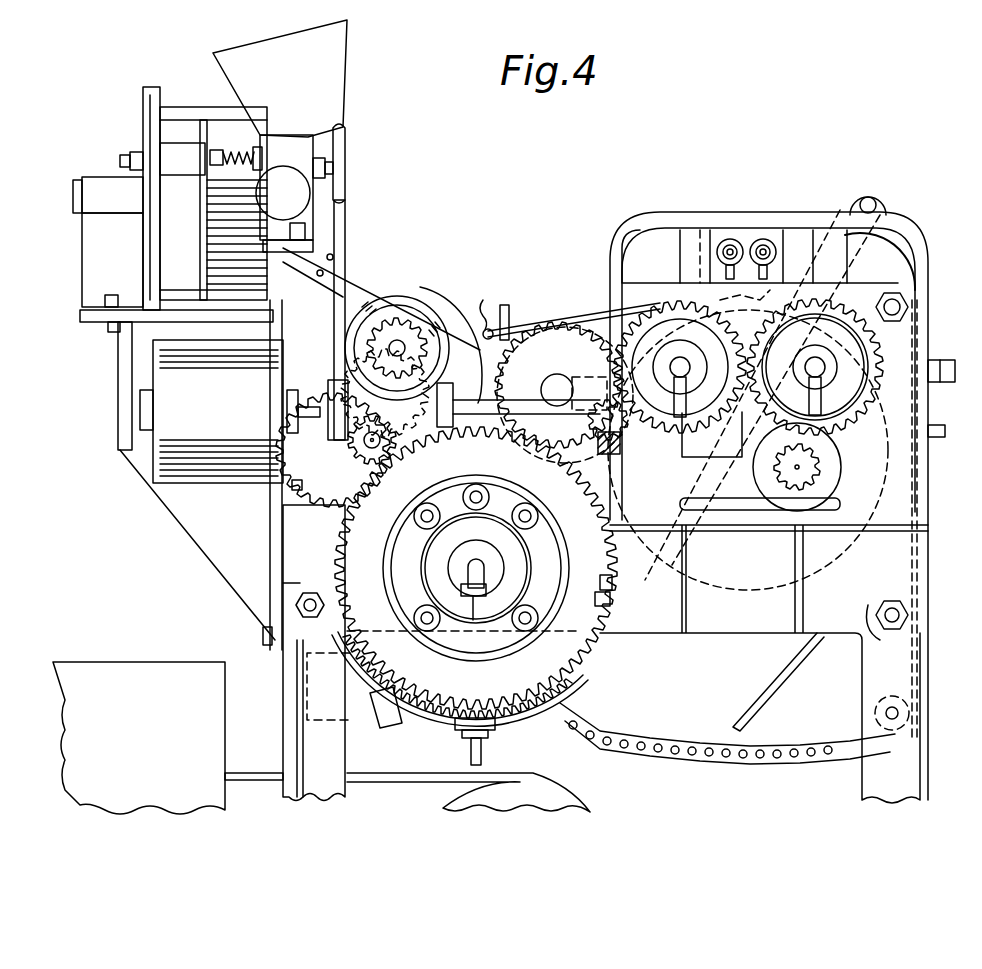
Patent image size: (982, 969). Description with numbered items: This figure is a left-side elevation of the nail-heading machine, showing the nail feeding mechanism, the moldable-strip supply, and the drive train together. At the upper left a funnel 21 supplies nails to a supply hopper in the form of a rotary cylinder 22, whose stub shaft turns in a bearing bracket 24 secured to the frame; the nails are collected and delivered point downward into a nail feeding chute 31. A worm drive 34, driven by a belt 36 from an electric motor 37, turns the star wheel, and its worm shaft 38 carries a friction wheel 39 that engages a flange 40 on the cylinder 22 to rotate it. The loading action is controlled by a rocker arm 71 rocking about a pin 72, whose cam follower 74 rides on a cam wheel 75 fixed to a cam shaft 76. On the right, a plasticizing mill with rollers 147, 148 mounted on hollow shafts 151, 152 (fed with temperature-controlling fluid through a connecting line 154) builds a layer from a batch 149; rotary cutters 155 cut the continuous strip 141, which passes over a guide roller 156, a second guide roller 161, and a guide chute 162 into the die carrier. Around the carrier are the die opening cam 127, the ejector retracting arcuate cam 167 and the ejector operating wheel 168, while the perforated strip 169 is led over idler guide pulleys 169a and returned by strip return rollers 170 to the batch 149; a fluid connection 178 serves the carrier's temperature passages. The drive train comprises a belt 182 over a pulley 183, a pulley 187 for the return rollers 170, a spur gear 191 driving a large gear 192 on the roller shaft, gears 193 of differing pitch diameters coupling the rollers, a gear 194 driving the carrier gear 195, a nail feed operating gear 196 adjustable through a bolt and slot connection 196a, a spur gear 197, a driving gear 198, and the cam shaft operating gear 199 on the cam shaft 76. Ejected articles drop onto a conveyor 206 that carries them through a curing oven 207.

The funnel 21 is at (337, 50).
The rotary cylinder 22 is at (205, 106).
The bearing bracket 24 is at (90, 238).
The nail feeding chute 31 is at (370, 272).
The worm drive 34 is at (300, 152).
The belt 36 is at (346, 228).
The electric motor 37 is at (190, 463).
The worm shaft 38 is at (228, 150).
The friction wheel 39 is at (150, 156).
The flange 40 is at (150, 107).
The rocker arm 71 is at (385, 440).
The pin 72 is at (447, 385).
The cam follower 74 is at (385, 393).
The cam wheel 75 is at (392, 322).
The cam shaft 76 is at (399, 346).
The die opening cam 127 is at (418, 706).
The continuous strip 141 is at (538, 330).
The mill roller 147 is at (850, 430).
The mill roller 148 is at (665, 295).
The batch 149 is at (742, 297).
The hollow shaft 151 is at (815, 367).
The hollow shaft 152 is at (680, 368).
The connecting line 154 is at (620, 420).
The rotary cutters 155 is at (590, 330).
The guide roller 156 is at (610, 290).
The guide roller 161 is at (567, 314).
The guide chute 162 is at (520, 445).
The ejector retracting arcuate cam 167 is at (535, 708).
The ejector operating wheel 168 is at (420, 682).
The perforated strip 169 is at (660, 737).
The idler guide pulleys 169a is at (874, 712).
The strip return rollers 170 is at (870, 196).
The fluid connection 178 is at (478, 600).
The belt 182 is at (778, 670).
The pulley 183 is at (748, 585).
The pulley 187 is at (895, 222).
The spur gear 191 is at (838, 470).
The large gear 192 is at (768, 478).
The gears 193 is at (757, 410).
The gear 194 is at (618, 442).
The gear 195 is at (615, 585).
The nail feed operating gear 196 is at (603, 598).
The bolt and slot connection 196a is at (517, 523).
The spur gear 197 is at (365, 468).
The driving gear 198 is at (323, 470).
The cam shaft operating gear 199 is at (393, 327).
The conveyor 206 is at (408, 775).
The curing oven 207 is at (143, 662).